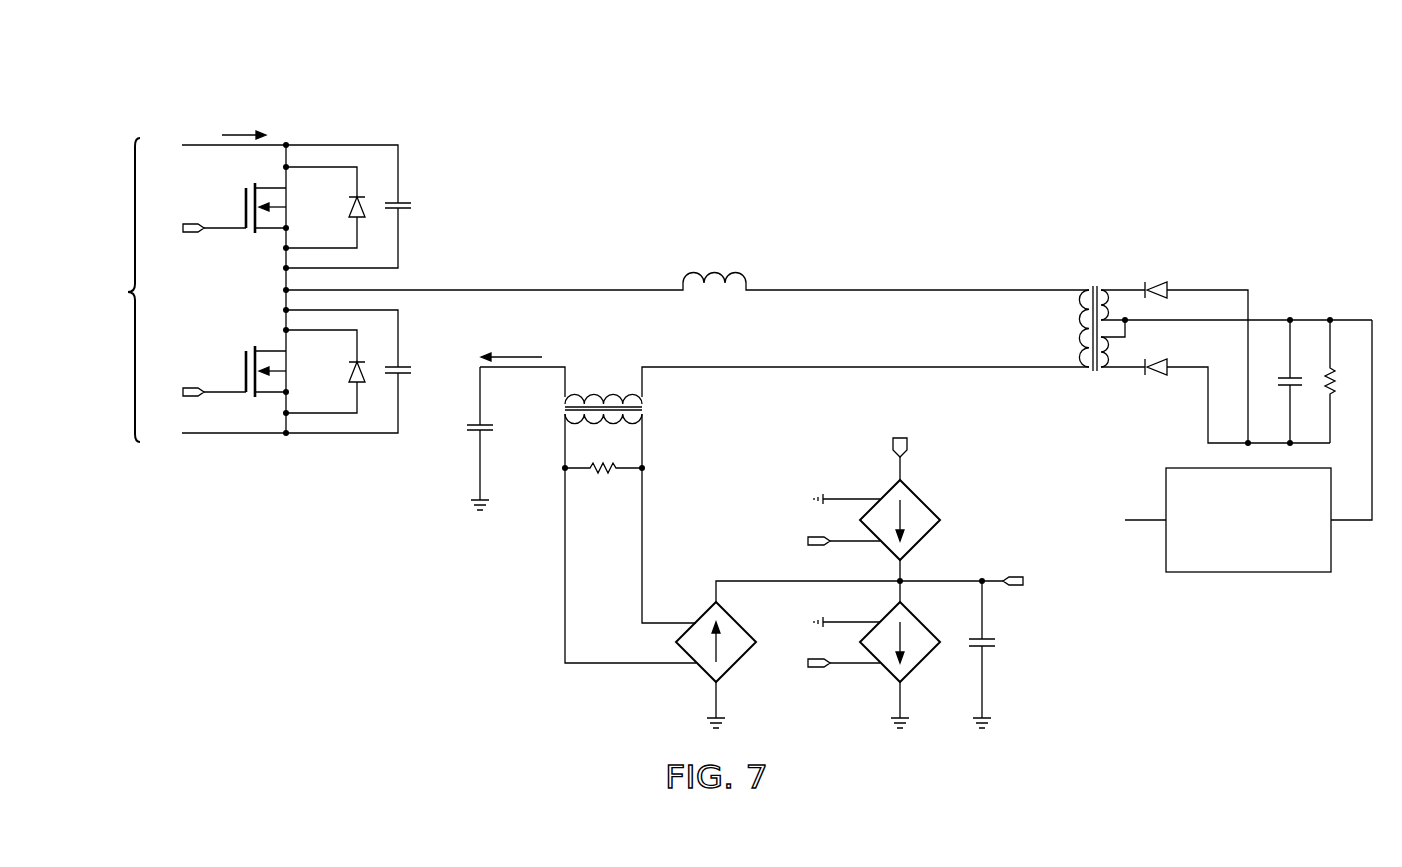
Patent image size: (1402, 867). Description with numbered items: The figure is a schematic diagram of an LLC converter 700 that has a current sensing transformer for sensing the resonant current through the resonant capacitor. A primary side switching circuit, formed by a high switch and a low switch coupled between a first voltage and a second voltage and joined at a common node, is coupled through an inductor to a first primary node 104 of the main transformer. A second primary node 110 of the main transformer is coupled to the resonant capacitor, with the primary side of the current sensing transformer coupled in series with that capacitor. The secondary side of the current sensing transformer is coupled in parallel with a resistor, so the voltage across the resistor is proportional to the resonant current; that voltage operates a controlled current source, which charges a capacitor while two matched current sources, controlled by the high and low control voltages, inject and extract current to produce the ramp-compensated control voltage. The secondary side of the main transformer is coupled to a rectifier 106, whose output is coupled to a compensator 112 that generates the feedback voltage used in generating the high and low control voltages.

The LLC converter 700 is at (747, 415).
The first primary node 104 is at (1074, 290).
The second primary node 110 is at (1203, 330).
The rectifier 106 is at (1356, 292).
The compensator 112 is at (1231, 553).